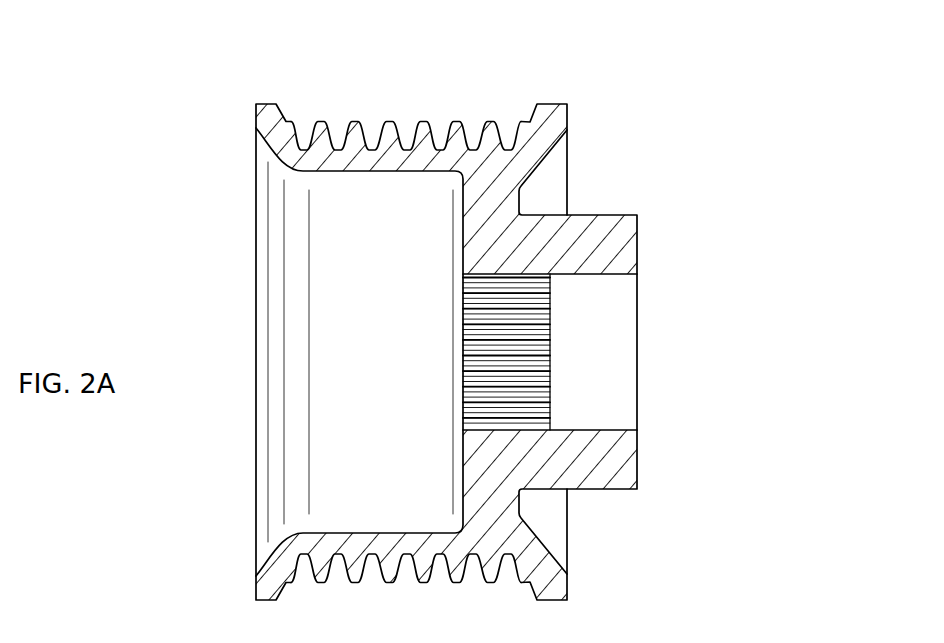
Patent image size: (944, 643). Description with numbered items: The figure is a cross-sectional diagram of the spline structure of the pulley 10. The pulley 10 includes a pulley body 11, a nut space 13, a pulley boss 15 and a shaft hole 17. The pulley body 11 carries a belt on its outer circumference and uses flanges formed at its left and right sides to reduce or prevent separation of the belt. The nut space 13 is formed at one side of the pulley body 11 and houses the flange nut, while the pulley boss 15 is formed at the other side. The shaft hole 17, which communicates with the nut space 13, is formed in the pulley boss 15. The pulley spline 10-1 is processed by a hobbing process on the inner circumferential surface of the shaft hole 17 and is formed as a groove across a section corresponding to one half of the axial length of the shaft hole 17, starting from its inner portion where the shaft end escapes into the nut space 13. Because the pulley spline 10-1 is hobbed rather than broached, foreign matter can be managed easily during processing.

The pulley 10 is at (690, 138).
The pulley body 11 is at (390, 153).
The nut space 13 is at (348, 258).
The pulley boss 15 is at (617, 238).
The shaft hole 17 is at (615, 310).
The pulley spline 10-1 is at (533, 388).